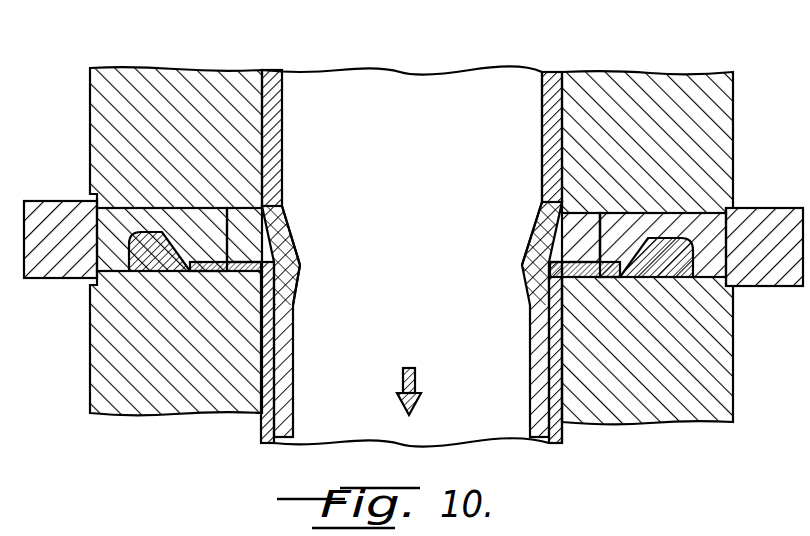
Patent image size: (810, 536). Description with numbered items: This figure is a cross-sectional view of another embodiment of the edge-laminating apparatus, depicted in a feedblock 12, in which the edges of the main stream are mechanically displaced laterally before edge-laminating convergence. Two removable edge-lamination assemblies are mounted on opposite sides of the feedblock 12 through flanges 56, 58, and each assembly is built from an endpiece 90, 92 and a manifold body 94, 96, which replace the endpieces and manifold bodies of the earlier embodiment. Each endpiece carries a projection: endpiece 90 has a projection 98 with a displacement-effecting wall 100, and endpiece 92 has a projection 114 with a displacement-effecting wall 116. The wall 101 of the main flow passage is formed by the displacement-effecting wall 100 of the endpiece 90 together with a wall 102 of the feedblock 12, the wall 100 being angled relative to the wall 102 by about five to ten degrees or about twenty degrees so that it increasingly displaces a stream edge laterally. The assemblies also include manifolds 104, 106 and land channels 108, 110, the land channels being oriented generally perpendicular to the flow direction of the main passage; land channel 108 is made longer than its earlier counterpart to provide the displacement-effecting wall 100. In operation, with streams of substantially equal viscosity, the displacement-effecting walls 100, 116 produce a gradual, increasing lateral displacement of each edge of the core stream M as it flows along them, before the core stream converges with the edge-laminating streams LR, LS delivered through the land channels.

The feedblock 12 is at (140, 68).
The flange 56 is at (772, 208).
The flange 58 is at (55, 204).
The endpiece 90 is at (645, 214).
The endpiece 92 is at (238, 210).
The manifold body 94 is at (648, 214).
The manifold body 96 is at (184, 210).
The projection 98 is at (535, 246).
The displacement-effecting wall 100 is at (584, 214).
The wall of the flow passage 101 is at (545, 166).
The wall of the feedblock 102 is at (560, 340).
The manifold 104 is at (678, 280).
The manifold 106 is at (142, 276).
The land channel 108 is at (598, 280).
The land channel 110 is at (232, 274).
The projection 114 is at (297, 224).
The displacement-effecting wall 116 is at (300, 254).
The edge-laminating stream LS is at (176, 275).
The edge-laminating stream LR is at (545, 366).
The stream M is at (420, 195).